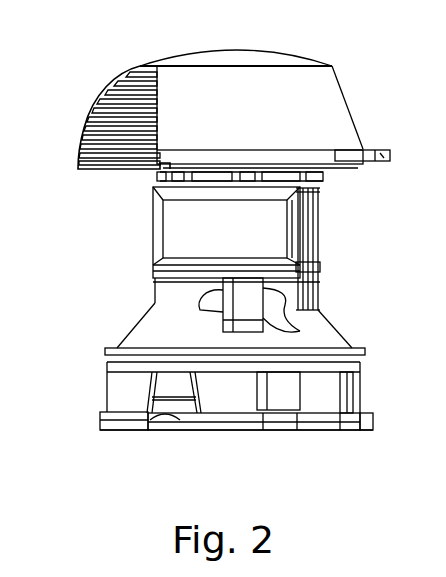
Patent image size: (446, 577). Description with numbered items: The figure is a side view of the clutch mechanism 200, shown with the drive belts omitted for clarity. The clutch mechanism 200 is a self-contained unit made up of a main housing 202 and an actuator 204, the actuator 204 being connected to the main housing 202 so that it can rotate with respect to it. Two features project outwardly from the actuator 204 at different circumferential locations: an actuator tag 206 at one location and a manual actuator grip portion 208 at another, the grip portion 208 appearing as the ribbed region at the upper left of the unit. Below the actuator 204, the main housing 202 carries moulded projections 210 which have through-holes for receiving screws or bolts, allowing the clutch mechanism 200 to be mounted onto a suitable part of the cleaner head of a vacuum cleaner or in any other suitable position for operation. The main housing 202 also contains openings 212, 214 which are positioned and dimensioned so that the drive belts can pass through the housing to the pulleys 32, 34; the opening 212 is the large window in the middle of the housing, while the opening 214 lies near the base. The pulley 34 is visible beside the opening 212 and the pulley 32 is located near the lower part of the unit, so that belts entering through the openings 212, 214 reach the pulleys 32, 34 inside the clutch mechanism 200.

The clutch mechanism 200 is at (84, 105).
The main housing 202 is at (147, 333).
The actuator 204 is at (320, 82).
The actuator tag 206 is at (390, 152).
The manual actuator grip portion 208 is at (130, 77).
The moulded projections 210 is at (263, 330).
The opening 212 is at (165, 222).
The opening 214 is at (165, 426).
The pulley 32 is at (178, 421).
The pulley 34 is at (270, 224).